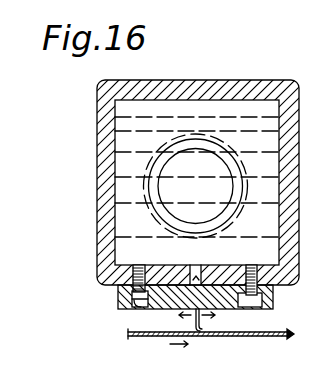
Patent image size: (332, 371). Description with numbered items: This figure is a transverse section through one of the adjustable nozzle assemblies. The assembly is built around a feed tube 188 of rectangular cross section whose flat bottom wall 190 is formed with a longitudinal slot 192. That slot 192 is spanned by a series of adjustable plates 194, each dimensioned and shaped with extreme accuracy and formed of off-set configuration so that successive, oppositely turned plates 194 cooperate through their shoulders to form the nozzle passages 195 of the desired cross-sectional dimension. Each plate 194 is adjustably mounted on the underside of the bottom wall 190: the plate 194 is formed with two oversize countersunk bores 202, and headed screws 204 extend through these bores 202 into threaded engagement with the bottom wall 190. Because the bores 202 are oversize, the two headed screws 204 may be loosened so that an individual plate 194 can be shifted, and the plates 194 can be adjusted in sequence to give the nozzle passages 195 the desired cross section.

The feed tube 188 is at (97, 180).
The bottom wall 190 is at (158, 265).
The longitudinal slot 192 is at (196, 265).
The adjustable plate 194 is at (274, 302).
The nozzle passage 195 is at (211, 328).
The countersunk bore 202 is at (137, 309).
The headed screw 204 is at (142, 310).